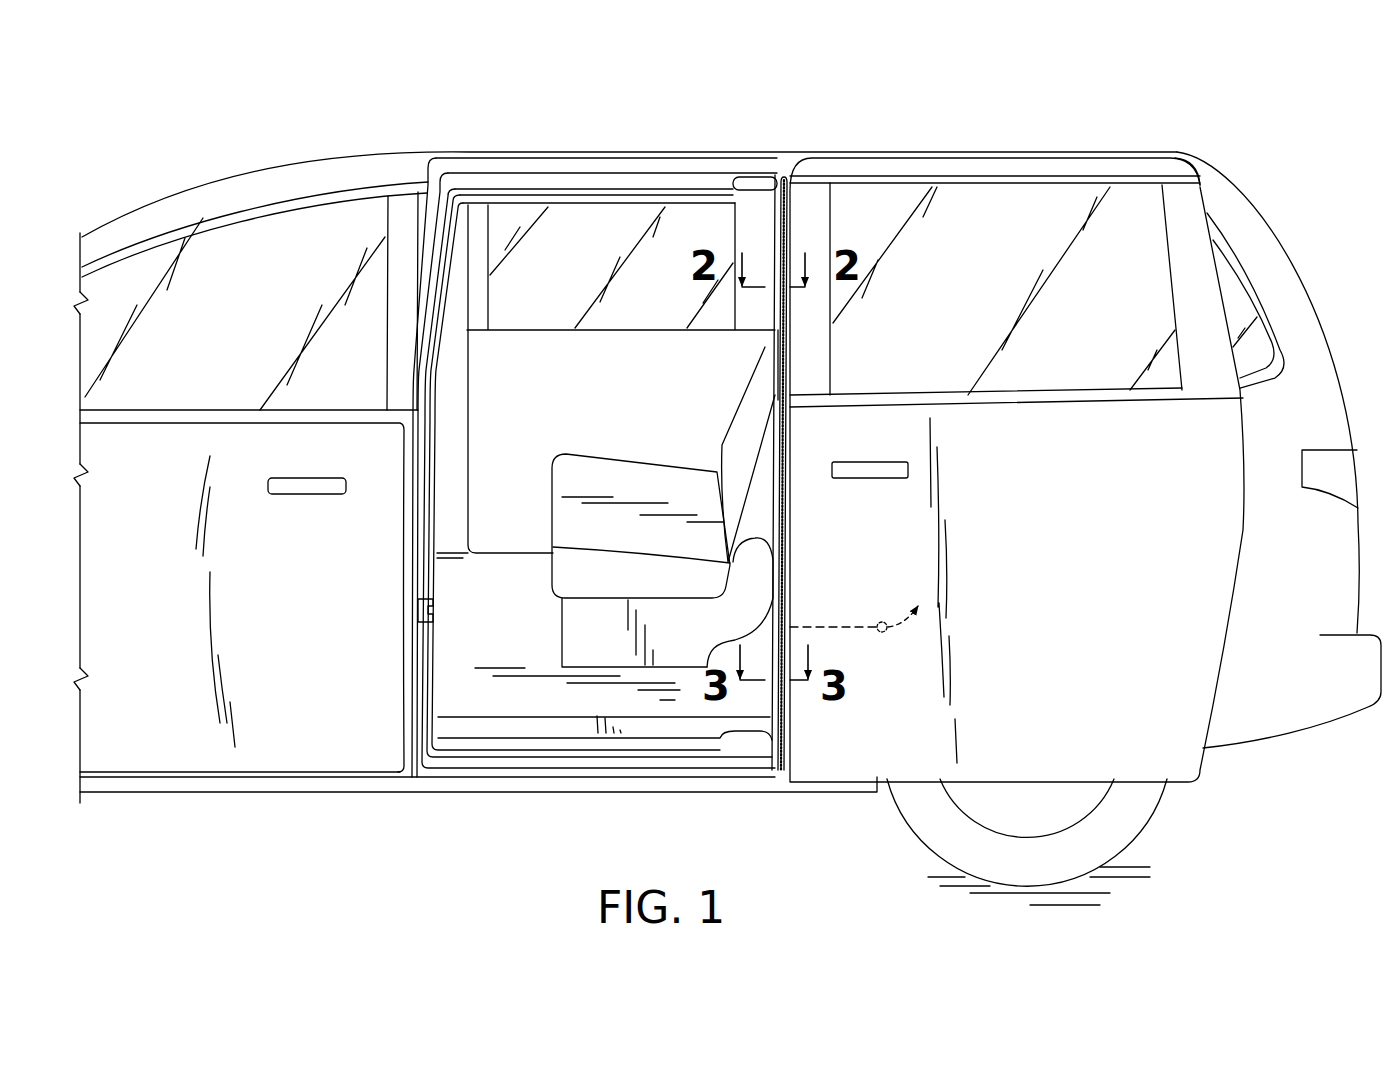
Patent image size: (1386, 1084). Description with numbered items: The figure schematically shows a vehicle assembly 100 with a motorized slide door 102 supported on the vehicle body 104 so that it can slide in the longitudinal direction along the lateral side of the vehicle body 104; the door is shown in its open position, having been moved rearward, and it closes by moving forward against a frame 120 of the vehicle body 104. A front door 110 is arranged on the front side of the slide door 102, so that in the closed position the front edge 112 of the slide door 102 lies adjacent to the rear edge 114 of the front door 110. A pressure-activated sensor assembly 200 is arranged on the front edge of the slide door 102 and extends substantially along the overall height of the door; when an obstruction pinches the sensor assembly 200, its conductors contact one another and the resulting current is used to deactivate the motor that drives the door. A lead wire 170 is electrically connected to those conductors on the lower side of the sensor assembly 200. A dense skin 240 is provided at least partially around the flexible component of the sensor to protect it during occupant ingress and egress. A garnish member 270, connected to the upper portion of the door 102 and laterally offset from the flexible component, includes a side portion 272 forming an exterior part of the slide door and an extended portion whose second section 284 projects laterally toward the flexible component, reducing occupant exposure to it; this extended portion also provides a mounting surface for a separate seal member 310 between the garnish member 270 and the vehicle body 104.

The vehicle assembly 100 is at (342, 140).
The motorized slide door 102 is at (1172, 745).
The vehicle body 104 is at (652, 165).
The front door 110 is at (333, 744).
The front edge 112 is at (780, 517).
The rear edge 114 is at (413, 345).
The frame 120 is at (426, 667).
The lead wire 170 is at (838, 618).
The pressure-activated sensor assembly 200 is at (773, 472).
The dense skin 240 is at (770, 595).
The garnish member 270 is at (836, 207).
The side portion 272 is at (813, 338).
The second section 284 is at (778, 367).
The separate seal member 310 is at (793, 211).